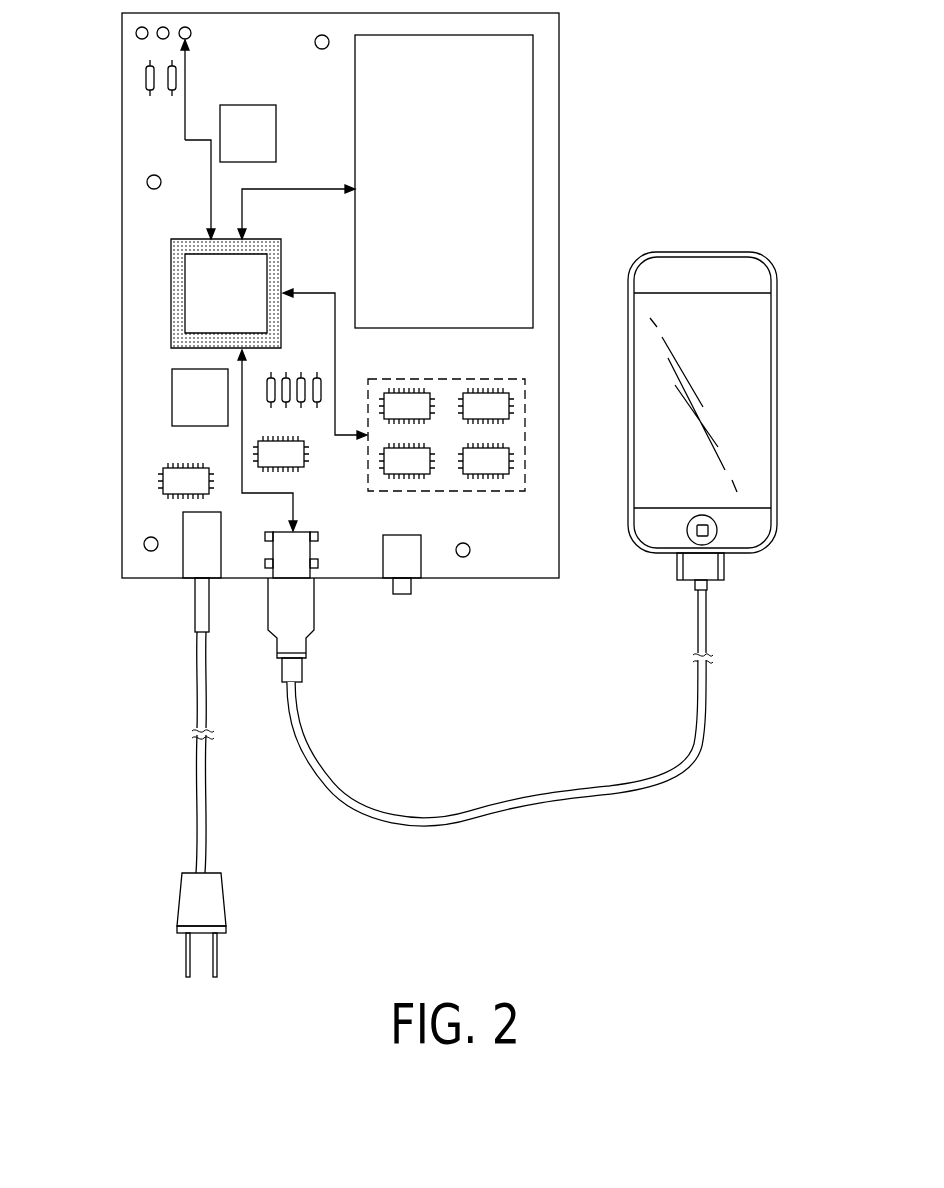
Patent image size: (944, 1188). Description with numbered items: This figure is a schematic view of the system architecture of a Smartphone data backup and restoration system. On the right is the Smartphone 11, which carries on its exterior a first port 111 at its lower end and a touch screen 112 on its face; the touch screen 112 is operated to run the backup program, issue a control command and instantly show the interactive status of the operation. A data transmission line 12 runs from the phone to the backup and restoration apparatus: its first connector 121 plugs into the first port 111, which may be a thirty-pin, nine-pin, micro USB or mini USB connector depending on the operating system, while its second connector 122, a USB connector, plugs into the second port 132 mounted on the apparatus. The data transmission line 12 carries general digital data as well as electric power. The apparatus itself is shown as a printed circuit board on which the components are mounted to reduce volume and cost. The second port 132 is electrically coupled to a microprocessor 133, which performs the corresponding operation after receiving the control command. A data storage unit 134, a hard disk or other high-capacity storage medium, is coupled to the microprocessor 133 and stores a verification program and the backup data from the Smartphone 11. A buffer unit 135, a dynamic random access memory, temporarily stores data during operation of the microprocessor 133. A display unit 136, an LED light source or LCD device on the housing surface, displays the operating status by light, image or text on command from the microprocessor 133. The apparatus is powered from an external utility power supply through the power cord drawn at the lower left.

The Smartphone 11 is at (755, 267).
The first port 111 is at (712, 558).
The touch screen 112 is at (748, 340).
The data transmission line 12 is at (702, 630).
The first connector 121 is at (708, 572).
The second connector 122 is at (282, 600).
The second port 132 is at (290, 553).
The microprocessor 133 is at (197, 289).
The data storage unit 134 is at (497, 491).
The buffer unit 135 is at (508, 90).
The display unit 136 is at (138, 38).